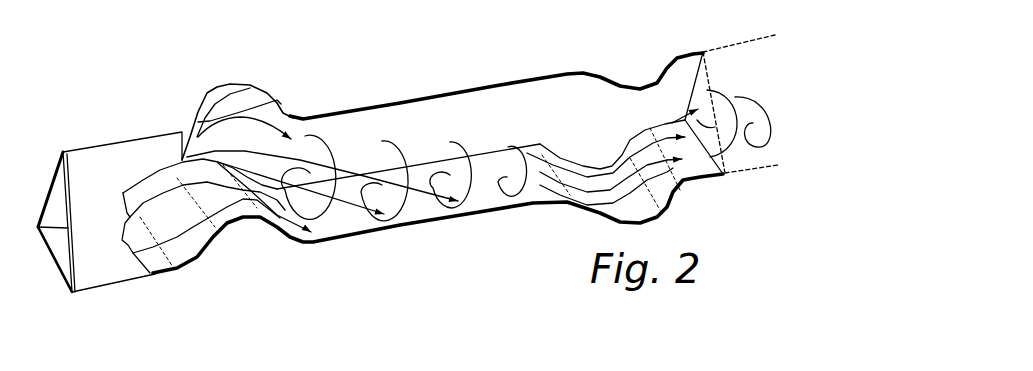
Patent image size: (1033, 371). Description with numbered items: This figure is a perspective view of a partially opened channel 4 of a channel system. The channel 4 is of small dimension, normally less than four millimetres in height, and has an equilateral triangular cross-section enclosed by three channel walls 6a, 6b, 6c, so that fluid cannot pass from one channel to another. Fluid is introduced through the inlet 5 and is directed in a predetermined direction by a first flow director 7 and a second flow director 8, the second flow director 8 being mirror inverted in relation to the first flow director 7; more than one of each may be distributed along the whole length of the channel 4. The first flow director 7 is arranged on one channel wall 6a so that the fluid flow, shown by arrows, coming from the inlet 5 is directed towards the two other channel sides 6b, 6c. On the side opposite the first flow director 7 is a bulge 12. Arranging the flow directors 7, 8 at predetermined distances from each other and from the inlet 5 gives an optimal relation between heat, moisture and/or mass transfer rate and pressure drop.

The channel 4 is at (128, 84).
The inlet 5 is at (57, 238).
The channel wall 6a is at (57, 273).
The channel wall 6b is at (75, 253).
The channel wall 6c is at (53, 187).
The first flow director 7 is at (237, 226).
The second flow director 8 is at (607, 220).
The bulge 12 is at (238, 97).